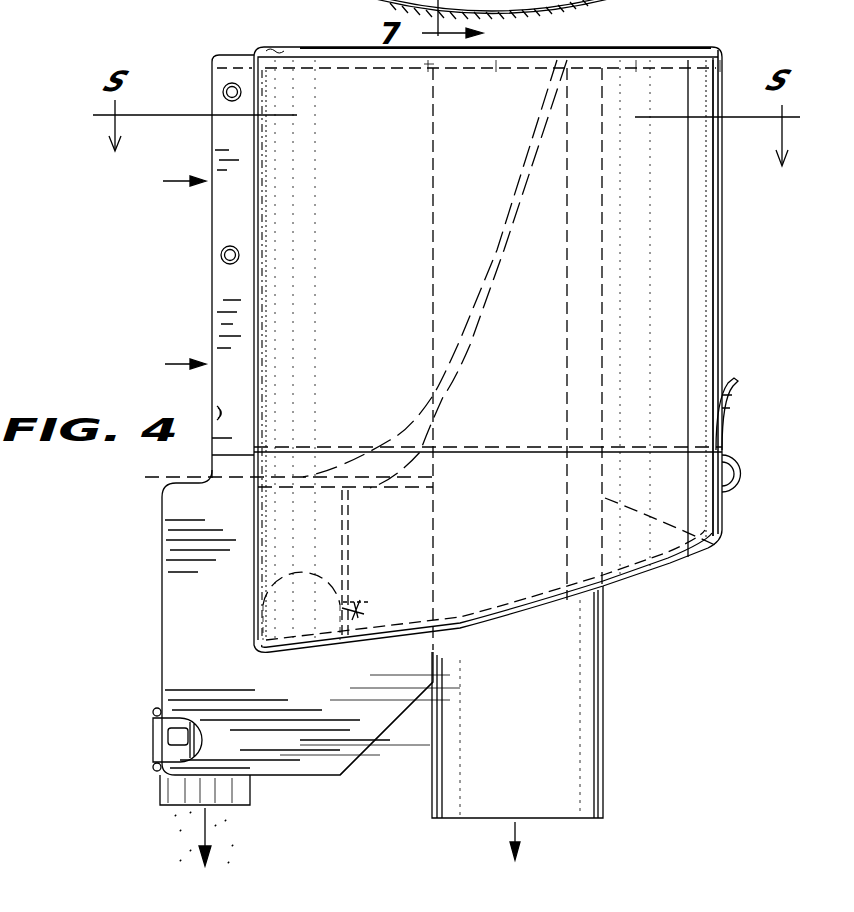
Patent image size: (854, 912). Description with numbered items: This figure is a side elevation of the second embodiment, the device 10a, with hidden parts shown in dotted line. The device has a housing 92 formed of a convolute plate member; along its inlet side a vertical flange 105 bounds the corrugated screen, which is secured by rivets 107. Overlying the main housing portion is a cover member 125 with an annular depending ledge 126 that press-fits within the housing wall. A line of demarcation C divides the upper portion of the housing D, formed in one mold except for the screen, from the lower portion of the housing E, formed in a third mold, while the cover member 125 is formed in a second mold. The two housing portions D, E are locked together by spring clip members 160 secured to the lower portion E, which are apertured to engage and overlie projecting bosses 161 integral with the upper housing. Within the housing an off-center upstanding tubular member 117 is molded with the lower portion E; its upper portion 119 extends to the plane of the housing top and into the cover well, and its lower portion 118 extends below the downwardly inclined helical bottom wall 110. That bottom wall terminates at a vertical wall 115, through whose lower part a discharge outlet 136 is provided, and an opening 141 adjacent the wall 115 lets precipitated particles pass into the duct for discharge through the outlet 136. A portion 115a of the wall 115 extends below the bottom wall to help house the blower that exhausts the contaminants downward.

The housing 92 is at (722, 45).
The vertical flange 105 is at (218, 208).
The rivets 107 is at (222, 262).
The device 10a is at (738, 266).
The cover member 125 is at (302, 45).
The annular depending ledge 126 is at (266, 46).
The upper portion of tubular member 119 is at (457, 95).
The upstanding tubular member 117 is at (446, 302).
The upper portion of the housing D is at (695, 328).
The line of demarcation C is at (495, 447).
The lower portion of the housing E is at (692, 503).
The projecting bosses 161 is at (734, 410).
The spring clip members 160 is at (736, 472).
The helical bottom wall 110 is at (205, 472).
The vertical wall 115 is at (275, 550).
The discharge outlet 136 is at (276, 610).
The opening 141 is at (362, 606).
The lower portion of tubular member 118 is at (565, 690).
The lower wall portion 115a is at (310, 765).